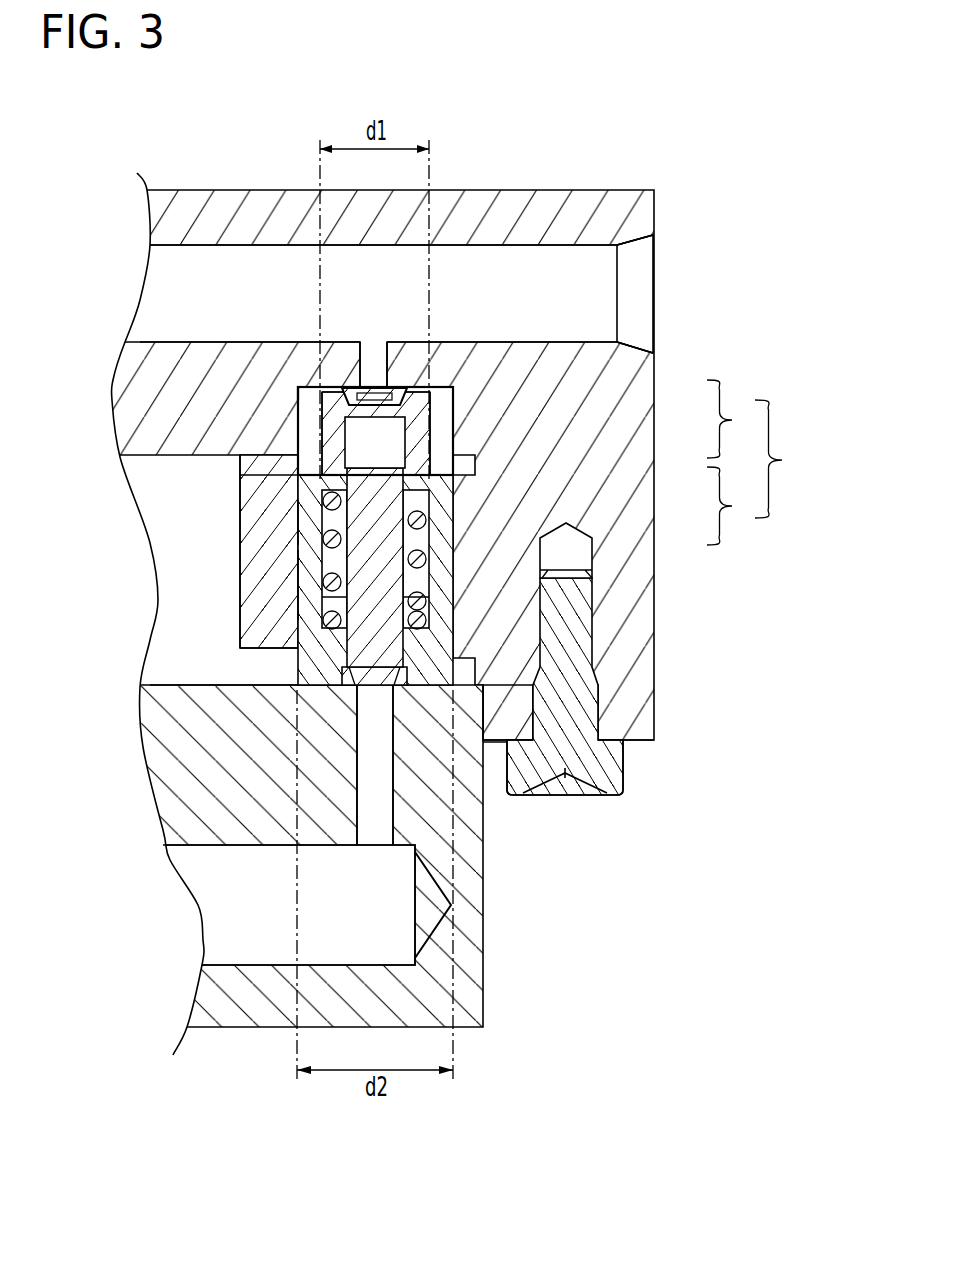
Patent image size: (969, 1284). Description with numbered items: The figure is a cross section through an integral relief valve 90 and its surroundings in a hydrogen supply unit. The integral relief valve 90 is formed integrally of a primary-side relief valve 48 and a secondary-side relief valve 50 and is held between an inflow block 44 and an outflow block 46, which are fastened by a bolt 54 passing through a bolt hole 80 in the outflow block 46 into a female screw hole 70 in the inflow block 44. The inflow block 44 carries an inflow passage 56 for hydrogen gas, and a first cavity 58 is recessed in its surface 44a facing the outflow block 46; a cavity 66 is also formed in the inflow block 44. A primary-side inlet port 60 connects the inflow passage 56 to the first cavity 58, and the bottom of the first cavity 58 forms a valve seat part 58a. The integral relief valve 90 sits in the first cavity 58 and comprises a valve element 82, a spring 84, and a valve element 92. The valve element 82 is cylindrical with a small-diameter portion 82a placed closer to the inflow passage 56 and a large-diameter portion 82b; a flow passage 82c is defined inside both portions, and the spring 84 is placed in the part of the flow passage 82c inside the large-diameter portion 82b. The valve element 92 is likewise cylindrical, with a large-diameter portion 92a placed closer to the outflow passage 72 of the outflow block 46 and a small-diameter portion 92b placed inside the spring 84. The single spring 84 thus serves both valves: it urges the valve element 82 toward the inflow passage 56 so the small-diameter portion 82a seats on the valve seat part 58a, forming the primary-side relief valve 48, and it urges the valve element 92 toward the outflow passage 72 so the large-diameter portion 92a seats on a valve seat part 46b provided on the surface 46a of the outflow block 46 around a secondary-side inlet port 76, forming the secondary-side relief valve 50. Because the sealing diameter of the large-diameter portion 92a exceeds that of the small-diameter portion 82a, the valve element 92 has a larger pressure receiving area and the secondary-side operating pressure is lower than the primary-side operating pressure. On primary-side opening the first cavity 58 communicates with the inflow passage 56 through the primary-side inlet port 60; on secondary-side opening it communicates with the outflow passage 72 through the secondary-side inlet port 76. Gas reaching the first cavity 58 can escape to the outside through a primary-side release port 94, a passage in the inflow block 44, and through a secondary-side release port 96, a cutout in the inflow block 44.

The inflow block 44 is at (660, 588).
The surface of the inflow block 44a is at (612, 700).
The outflow block 46 is at (490, 898).
The surface of the outflow block 46a is at (193, 686).
The valve seat part 46b is at (292, 687).
The primary-side relief valve 48 is at (737, 419).
The secondary-side relief valve 50 is at (737, 506).
The bolt 54 is at (577, 793).
The inflow passage 56 is at (217, 308).
The first cavity 58 is at (307, 382).
The valve seat part 58a is at (445, 385).
The primary-side inlet port 60 is at (368, 384).
The cavity 66 is at (242, 545).
The female screw hole 70 is at (585, 722).
The outflow passage 72 is at (262, 925).
The secondary-side inlet port 76 is at (368, 848).
The bolt hole 80 is at (600, 765).
The valve element 82 is at (445, 392).
The small-diameter portion 82a is at (630, 345).
The large-diameter portion 82b is at (300, 590).
The flow passage 82c is at (290, 405).
The spring 84 is at (418, 430).
The integral relief valve 90 is at (787, 459).
The valve element 92 is at (442, 598).
The large-diameter portion 92a is at (423, 670).
The small-diameter portion 92b is at (305, 523).
The primary-side release port 94 is at (243, 487).
The secondary-side release port 96 is at (262, 650).